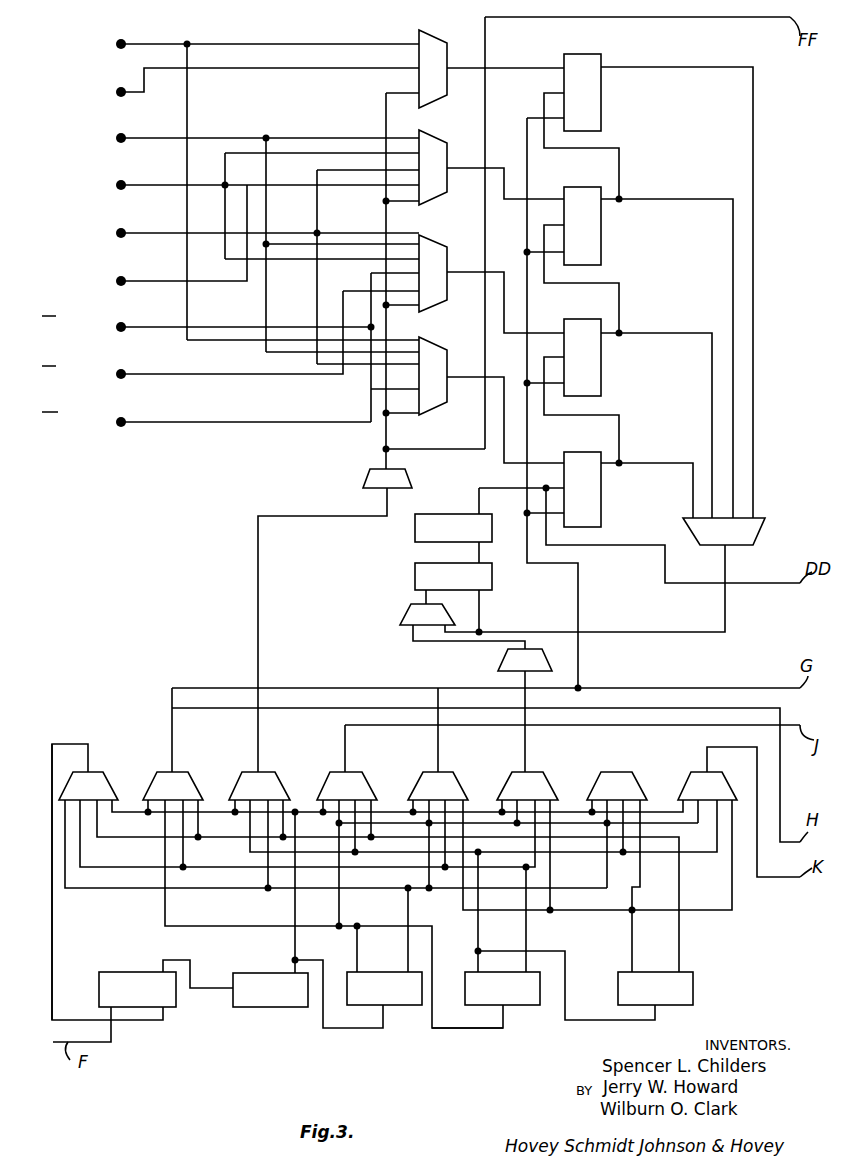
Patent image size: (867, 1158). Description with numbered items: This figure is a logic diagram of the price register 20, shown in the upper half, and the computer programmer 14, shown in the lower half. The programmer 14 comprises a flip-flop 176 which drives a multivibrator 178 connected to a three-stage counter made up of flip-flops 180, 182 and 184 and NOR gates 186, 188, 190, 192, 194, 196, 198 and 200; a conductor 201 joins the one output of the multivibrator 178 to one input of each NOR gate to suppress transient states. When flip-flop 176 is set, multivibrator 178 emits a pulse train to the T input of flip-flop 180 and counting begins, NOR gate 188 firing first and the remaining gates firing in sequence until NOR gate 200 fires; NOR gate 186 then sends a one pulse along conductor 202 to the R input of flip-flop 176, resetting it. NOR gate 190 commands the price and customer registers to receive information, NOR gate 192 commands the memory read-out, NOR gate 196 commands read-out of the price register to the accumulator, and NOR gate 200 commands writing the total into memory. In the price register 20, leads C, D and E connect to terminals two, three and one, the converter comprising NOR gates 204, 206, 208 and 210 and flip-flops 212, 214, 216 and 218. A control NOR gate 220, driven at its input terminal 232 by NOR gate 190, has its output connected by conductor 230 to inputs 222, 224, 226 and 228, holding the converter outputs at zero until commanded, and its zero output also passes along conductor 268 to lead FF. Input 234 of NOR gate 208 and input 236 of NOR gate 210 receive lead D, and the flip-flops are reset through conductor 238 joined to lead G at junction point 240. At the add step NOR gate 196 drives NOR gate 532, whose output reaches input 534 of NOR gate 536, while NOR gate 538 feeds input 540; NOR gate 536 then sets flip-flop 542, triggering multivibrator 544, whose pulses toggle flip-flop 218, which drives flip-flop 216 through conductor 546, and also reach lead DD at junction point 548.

The programmer 14 is at (406, 1068).
The price register 20 is at (242, 463).
The flip-flop 176 is at (99, 986).
The multivibrator 178 is at (252, 1007).
The flip-flop 180 is at (398, 1007).
The flip-flop 182 is at (518, 1007).
The flip-flop 184 is at (680, 1008).
The NOR gate 186 is at (103, 774).
The NOR gate 188 is at (190, 775).
The NOR gate 190 is at (278, 780).
The NOR gate 192 is at (365, 780).
The NOR gate 194 is at (455, 776).
The NOR gate 196 is at (545, 778).
The NOR gate 198 is at (628, 772).
The NOR gate 200 is at (688, 774).
The conductor 201 is at (295, 907).
The conductor 202 is at (56, 935).
The NOR gate 204 is at (419, 35).
The NOR gate 206 is at (420, 132).
The NOR gate 208 is at (420, 237).
The NOR gate 210 is at (420, 339).
The flip-flop 212 is at (601, 93).
The flip-flop 214 is at (601, 238).
The flip-flop 216 is at (601, 361).
The flip-flop 218 is at (601, 493).
The control NOR gate 220 is at (406, 482).
The input 222 is at (419, 93).
The input 224 is at (419, 206).
The input 226 is at (419, 312).
The input 228 is at (419, 416).
The conductor 230 is at (371, 235).
The input terminal 232 is at (380, 491).
The input 234 is at (419, 265).
The input 236 is at (419, 392).
The conductor 238 is at (578, 607).
The junction point 240 is at (580, 687).
The conductor 268 is at (485, 244).
The NOR gate 532 is at (508, 655).
The input 534 is at (412, 630).
The NOR gate 536 is at (411, 610).
The NOR gate 538 is at (760, 530).
The input 540 is at (448, 632).
The flip-flop 542 is at (415, 578).
The multivibrator 544 is at (415, 530).
The conductor 546 is at (557, 416).
The junction point 548 is at (544, 486).